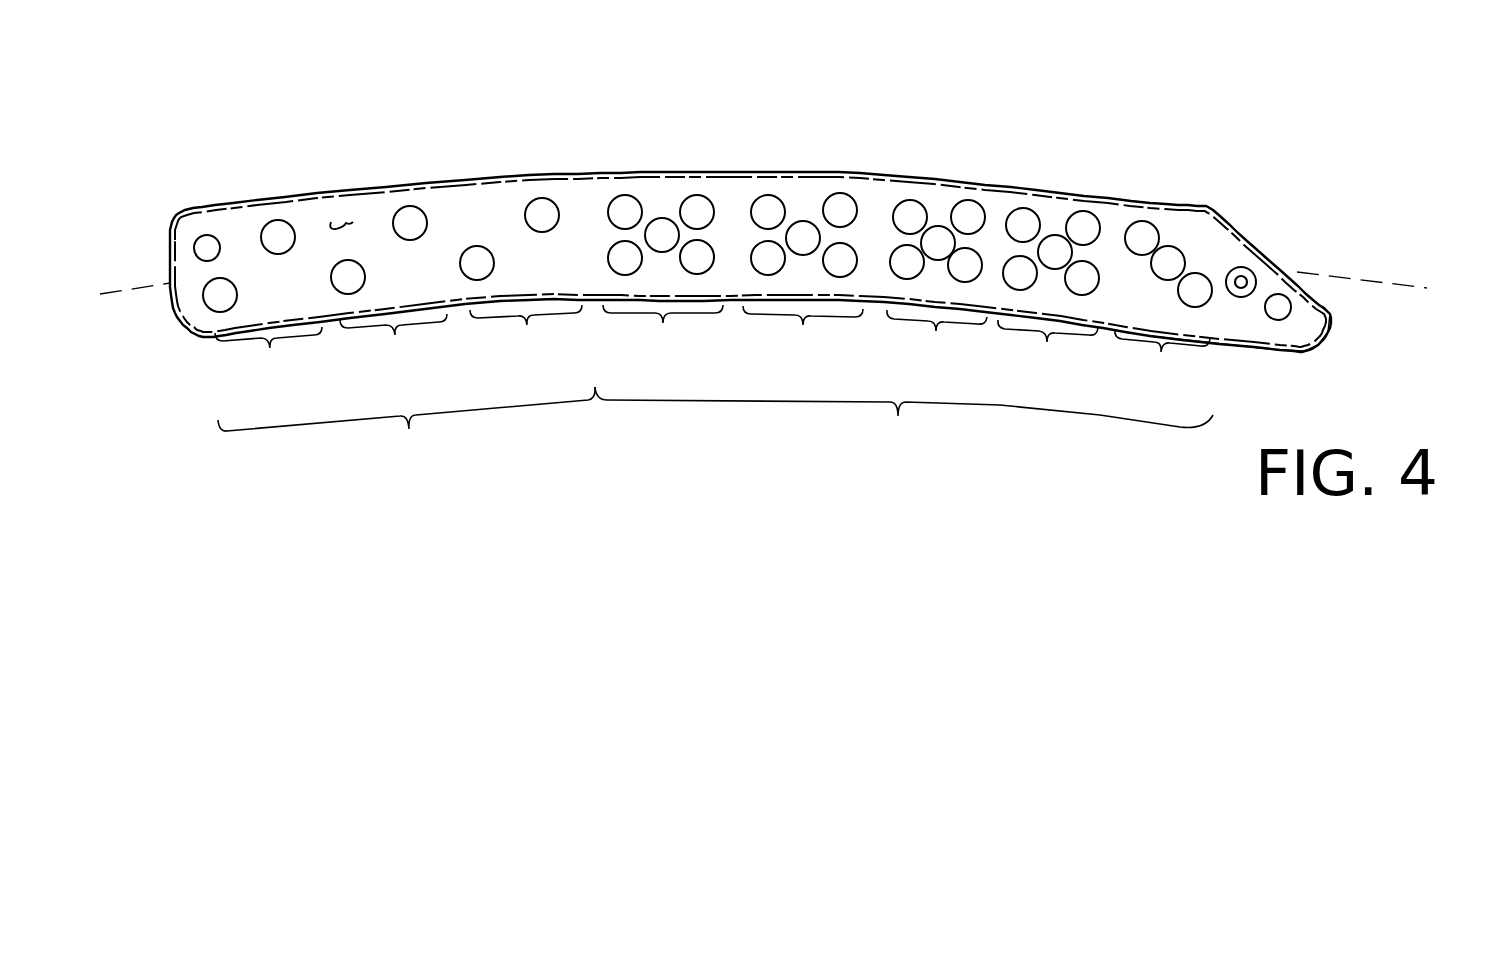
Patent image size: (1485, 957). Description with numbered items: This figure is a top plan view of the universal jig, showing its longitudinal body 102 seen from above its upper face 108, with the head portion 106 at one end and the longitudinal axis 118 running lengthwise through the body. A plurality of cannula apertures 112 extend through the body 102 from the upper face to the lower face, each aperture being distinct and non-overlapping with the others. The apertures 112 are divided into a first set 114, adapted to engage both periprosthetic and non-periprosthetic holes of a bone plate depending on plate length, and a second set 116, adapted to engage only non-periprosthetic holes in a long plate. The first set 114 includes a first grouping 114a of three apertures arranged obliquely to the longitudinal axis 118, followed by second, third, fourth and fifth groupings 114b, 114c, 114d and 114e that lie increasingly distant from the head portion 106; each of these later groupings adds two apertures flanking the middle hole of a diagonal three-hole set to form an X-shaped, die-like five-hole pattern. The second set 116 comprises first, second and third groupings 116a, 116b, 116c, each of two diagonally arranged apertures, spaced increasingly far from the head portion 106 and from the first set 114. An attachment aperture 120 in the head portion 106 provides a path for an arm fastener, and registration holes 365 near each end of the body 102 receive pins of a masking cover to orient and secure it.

The longitudinal body 102 is at (877, 144).
The head portion 106 is at (1242, 194).
The upper face 108 is at (345, 220).
The cannula apertures 112 is at (477, 263).
The first set of apertures 114 is at (904, 420).
The first grouping 114a is at (1162, 356).
The second grouping 114b is at (1048, 346).
The third grouping 114c is at (937, 336).
The fourth grouping 114d is at (803, 331).
The fifth grouping 114e is at (663, 330).
The second set of apertures 116 is at (406, 424).
The first grouping of second set 116a is at (526, 332).
The second grouping of second set 116b is at (393, 345).
The third grouping of second set 116c is at (268, 358).
The longitudinal axis 118 is at (1363, 277).
The attachment aperture 120 is at (1243, 280).
The registration holes 365 is at (207, 240).